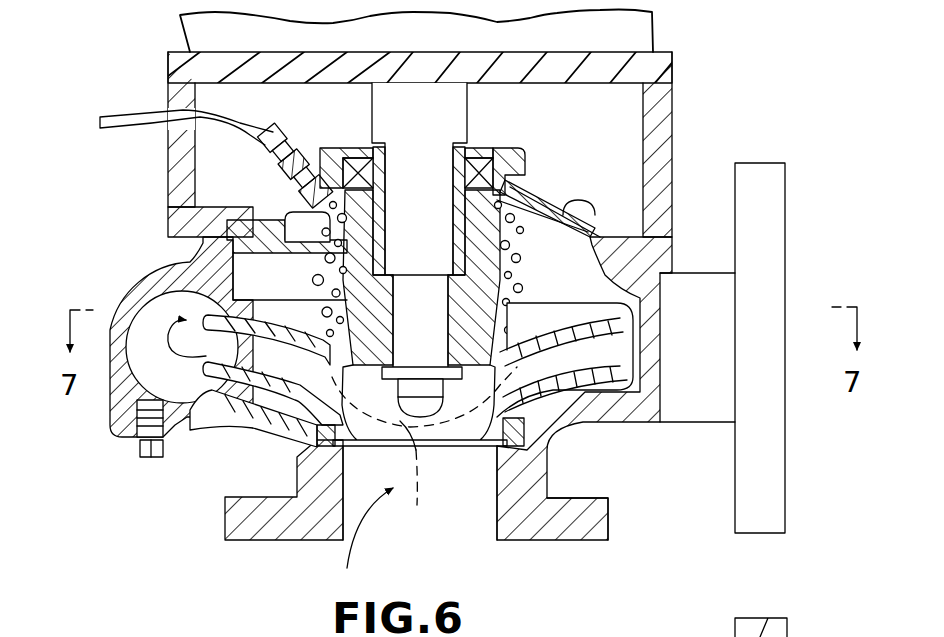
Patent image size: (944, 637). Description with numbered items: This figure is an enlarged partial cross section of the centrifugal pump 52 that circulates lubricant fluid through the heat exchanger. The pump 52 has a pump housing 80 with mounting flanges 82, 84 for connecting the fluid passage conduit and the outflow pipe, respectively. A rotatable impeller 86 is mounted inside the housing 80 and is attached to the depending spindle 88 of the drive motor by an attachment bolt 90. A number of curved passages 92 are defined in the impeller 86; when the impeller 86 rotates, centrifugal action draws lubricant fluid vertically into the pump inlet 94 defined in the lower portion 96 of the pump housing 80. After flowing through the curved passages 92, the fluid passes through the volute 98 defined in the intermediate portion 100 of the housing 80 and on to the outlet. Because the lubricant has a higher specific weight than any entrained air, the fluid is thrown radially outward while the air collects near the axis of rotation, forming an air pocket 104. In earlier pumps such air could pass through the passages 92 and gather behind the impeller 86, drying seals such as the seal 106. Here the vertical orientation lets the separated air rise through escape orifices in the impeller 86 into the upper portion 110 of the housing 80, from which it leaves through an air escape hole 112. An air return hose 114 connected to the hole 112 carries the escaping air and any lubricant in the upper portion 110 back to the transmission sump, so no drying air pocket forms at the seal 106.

The centrifugal pump 52 is at (733, 120).
The pump housing 80 is at (172, 480).
The mounting flange 82 is at (595, 542).
The mounting flange 84 is at (785, 202).
The impeller 86 is at (545, 318).
The spindle 88 is at (468, 123).
The attachment bolt 90 is at (445, 388).
The curved passages 92 is at (620, 353).
The pump inlet 94 is at (488, 545).
The lower portion 96 is at (543, 488).
The volute 98 is at (153, 370).
The intermediate portion 100 is at (128, 287).
The air pocket 104 is at (424, 467).
The seal 106 is at (493, 148).
The upper portion 110 is at (550, 195).
The air escape hole 112 is at (322, 150).
The air return hose 114 is at (118, 113).